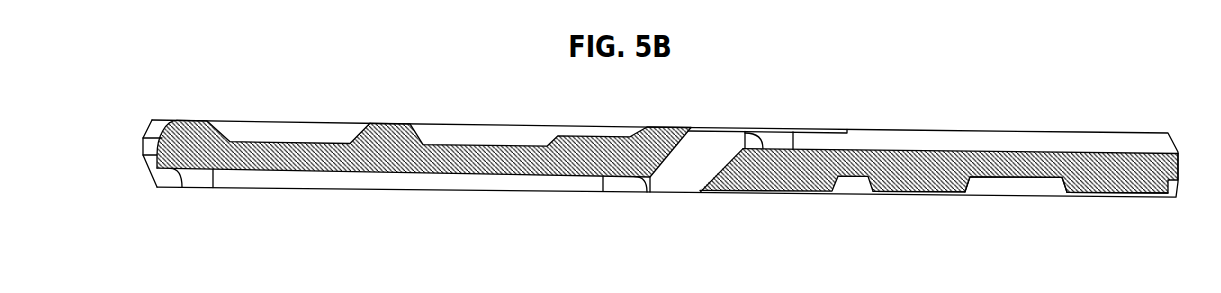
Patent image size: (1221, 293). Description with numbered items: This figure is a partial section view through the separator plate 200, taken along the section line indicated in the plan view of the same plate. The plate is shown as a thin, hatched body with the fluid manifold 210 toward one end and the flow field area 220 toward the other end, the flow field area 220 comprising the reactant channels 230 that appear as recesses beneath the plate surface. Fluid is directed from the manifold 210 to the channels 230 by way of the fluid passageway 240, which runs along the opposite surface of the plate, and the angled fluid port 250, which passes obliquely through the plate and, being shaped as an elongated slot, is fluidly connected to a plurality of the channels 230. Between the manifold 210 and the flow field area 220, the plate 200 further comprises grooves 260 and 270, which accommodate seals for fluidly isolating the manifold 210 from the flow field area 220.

The separator plate 200 is at (1088, 168).
The fluid manifold 210 is at (126, 138).
The flow field area 220 is at (1160, 97).
The reactant channels 230 is at (940, 142).
The fluid passageway 240 is at (457, 183).
The angled fluid port 250 is at (690, 172).
The groove 260 is at (265, 135).
The groove 270 is at (457, 142).